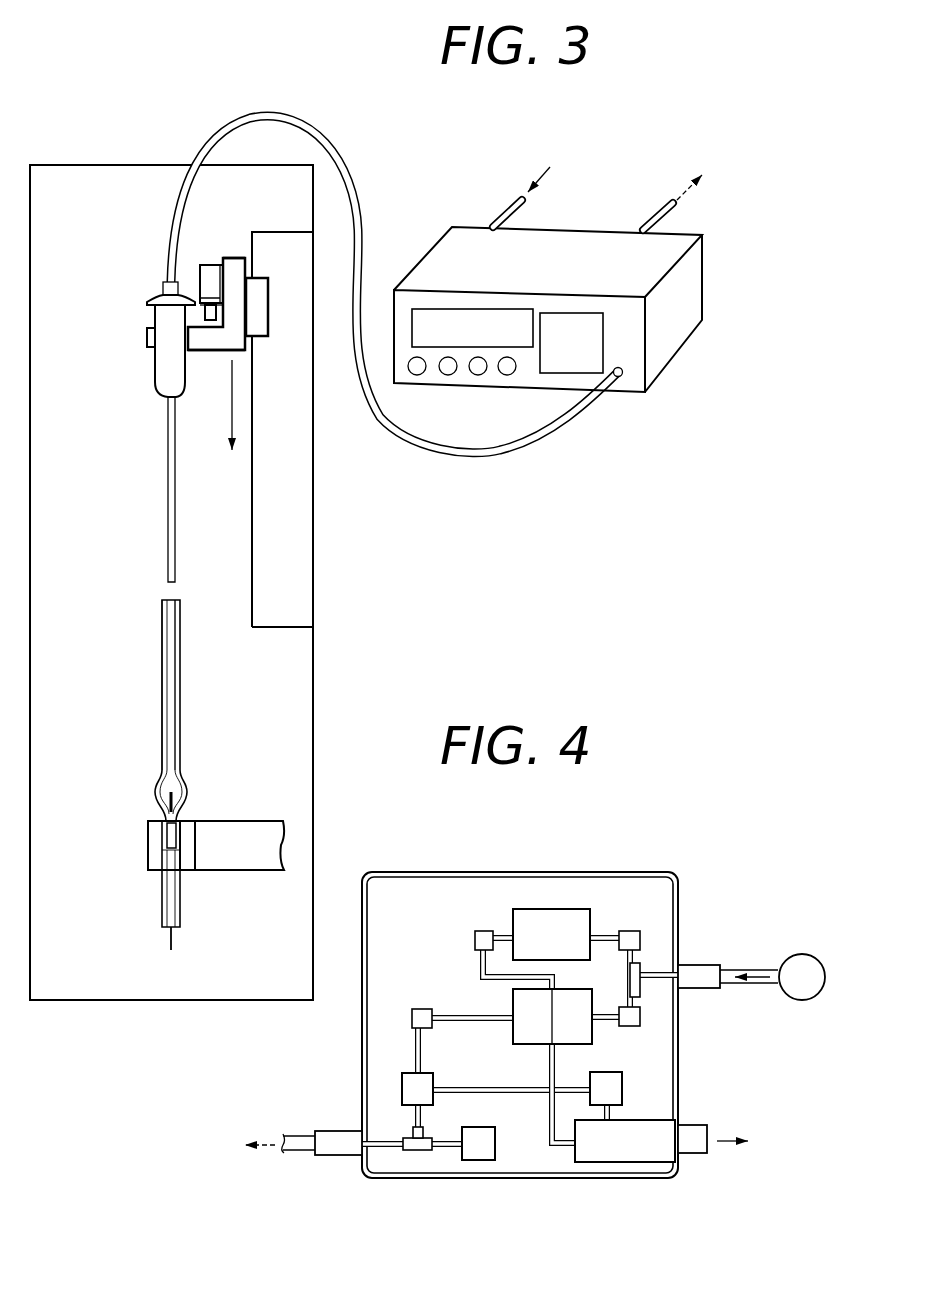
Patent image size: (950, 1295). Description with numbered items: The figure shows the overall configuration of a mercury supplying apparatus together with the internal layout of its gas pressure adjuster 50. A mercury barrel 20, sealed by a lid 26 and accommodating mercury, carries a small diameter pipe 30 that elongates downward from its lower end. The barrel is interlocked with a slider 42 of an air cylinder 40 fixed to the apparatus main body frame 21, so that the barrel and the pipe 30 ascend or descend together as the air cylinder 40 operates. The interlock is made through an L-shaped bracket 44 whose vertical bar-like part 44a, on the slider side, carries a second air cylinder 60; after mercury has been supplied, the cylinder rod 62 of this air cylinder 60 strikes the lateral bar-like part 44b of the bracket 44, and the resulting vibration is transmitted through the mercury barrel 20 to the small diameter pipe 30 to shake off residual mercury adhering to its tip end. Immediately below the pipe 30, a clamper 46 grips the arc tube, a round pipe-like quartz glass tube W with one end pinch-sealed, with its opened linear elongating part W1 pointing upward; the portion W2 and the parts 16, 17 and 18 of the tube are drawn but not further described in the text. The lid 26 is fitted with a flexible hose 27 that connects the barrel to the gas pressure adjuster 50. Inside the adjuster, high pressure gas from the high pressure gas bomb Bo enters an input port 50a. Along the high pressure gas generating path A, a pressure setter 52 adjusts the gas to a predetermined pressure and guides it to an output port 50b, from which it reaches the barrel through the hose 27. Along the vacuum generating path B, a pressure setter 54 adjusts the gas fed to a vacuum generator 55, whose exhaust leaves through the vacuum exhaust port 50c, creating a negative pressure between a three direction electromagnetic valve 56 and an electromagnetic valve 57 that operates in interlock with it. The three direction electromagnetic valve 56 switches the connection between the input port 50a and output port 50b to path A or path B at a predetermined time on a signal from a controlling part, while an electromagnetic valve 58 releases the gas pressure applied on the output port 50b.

In FIG. 3, the apparatus main body frame 21 is at (96, 163).
In FIG. 3, the flexible hose 27 is at (258, 118).
In FIG. 3, the lid 26 is at (148, 300).
In FIG. 3, the mercury barrel 20 is at (153, 378).
In FIG. 3, the small diameter pipe 30 is at (168, 487).
In FIG. 3, the air cylinder 60 is at (203, 283).
In FIG. 3, the cylinder rod 62 is at (205, 313).
In FIG. 3, the slider 42 is at (260, 317).
In FIG. 3, the bracket 44 is at (237, 348).
In FIG. 3, the vertical bar-like part 44a is at (233, 257).
In FIG. 3, the lateral bar-like part 44b is at (203, 347).
In FIG. 3, the air cylinder 40 is at (297, 536).
In FIG. 3, the quartz glass tube W is at (153, 733).
In FIG. 3, the linear elongating part W1 is at (162, 685).
In FIG. 3, the bulb portion W2 is at (187, 790).
In FIG. 3, the stopper 16 is at (163, 805).
In FIG. 3, the filter 17 is at (167, 838).
In FIG. 3, the tip 18 is at (170, 942).
In FIG. 3, the clamper 46 is at (242, 868).
In FIG. 3, the gas pressure adjuster 50 is at (431, 243).
In FIG. 4, the gas pressure adjuster 50 is at (434, 866).
In FIG. 3, the input port 50a is at (493, 227).
In FIG. 4, the input port 50a is at (680, 986).
In FIG. 3, the output port 50b is at (622, 378).
In FIG. 4, the output port 50b is at (355, 1156).
In FIG. 3, the vacuum exhaust port 50c is at (643, 230).
In FIG. 4, the vacuum exhaust port 50c is at (700, 1155).
In FIG. 4, the pressure setter 54 is at (513, 915).
In FIG. 4, the pressure setter 52 is at (513, 1003).
In FIG. 4, the three direction electromagnetic valve 56 is at (433, 1080).
In FIG. 4, the electromagnetic valve 57 is at (612, 1072).
In FIG. 4, the vacuum generator 55 is at (650, 1120).
In FIG. 4, the electromagnetic valve 58 is at (495, 1133).
In FIG. 4, the high pressure gas generating path A is at (436, 1001).
In FIG. 4, the vacuum generating path B is at (555, 1157).
In FIG. 4, the high pressure gas bomb Bo is at (802, 977).